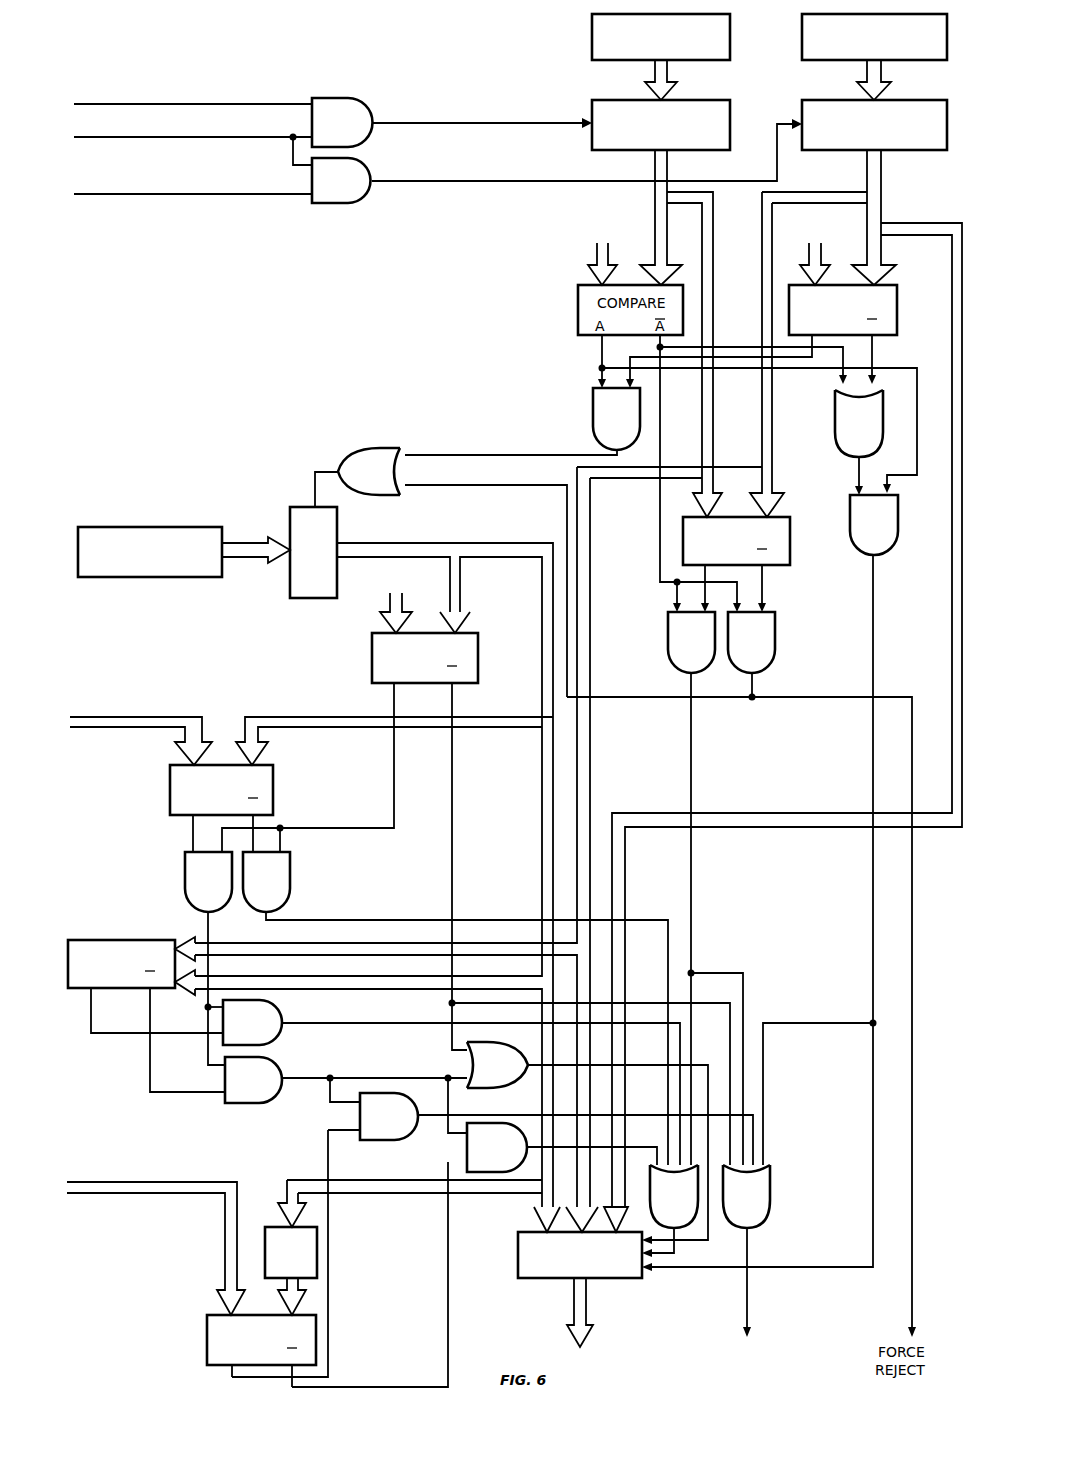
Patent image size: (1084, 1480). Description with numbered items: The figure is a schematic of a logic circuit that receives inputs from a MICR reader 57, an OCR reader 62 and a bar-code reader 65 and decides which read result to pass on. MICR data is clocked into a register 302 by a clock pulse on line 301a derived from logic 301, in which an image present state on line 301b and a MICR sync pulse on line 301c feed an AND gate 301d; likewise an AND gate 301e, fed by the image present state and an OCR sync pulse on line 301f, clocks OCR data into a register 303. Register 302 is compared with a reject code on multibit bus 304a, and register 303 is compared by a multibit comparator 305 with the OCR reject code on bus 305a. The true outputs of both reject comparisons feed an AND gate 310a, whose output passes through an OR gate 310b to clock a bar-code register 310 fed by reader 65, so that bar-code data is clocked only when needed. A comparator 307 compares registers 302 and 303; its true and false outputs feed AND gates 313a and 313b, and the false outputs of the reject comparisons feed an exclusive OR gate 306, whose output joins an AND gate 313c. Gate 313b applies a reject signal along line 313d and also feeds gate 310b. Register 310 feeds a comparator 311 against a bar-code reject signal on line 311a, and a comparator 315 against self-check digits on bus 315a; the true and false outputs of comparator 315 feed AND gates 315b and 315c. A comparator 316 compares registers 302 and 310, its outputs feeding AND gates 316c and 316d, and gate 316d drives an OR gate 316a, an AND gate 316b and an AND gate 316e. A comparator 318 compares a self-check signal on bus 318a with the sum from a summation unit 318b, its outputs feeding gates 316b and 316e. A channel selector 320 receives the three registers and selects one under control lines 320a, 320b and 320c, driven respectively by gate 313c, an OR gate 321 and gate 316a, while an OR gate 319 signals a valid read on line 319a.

The MICR reader 57 is at (592, 30).
The OCR reader 62 is at (802, 28).
The bar-code reader 65 is at (108, 527).
The logic 301 is at (358, 88).
The line 301a is at (455, 121).
The line 301b is at (228, 103).
The line 301c is at (258, 141).
The AND gate 301d is at (356, 135).
The AND gate 301e is at (356, 194).
The line 301f is at (207, 197).
The register 302 is at (592, 108).
The register 303 is at (802, 108).
The multibit bus 304a is at (594, 253).
The multibit comparator 305 is at (897, 297).
The bus 305a is at (805, 254).
The exclusive OR gate 306 is at (876, 432).
The comparator 307 is at (790, 525).
The register 310 is at (340, 533).
The AND gate 310a is at (635, 425).
The OR gate 310b is at (388, 483).
The comparator 311 is at (478, 642).
The line 311a is at (385, 604).
The AND gate 313a is at (711, 654).
The AND gate 313b is at (771, 654).
The AND gate 313c is at (893, 537).
The line 313d is at (800, 697).
The comparator 315 is at (170, 800).
The bus 315a is at (118, 730).
The AND gate 315b is at (228, 894).
The AND gate 315c is at (286, 894).
The comparator 316 is at (86, 940).
The OR gate 316a is at (512, 1077).
The AND gate 316b is at (402, 1128).
The AND gate 316c is at (266, 1034).
The AND gate 316d is at (268, 1091).
The AND gate 316e is at (510, 1159).
The comparator 318 is at (207, 1337).
The bus 318a is at (128, 1196).
The summation unit 318b is at (317, 1263).
The OR gate 319 is at (763, 1204).
The line 319a is at (748, 1297).
The channel selector 320 is at (518, 1245).
The control line 320a is at (778, 1272).
The control line 320b is at (690, 1258).
The control line 320c is at (652, 1278).
The OR gate 321 is at (690, 1204).